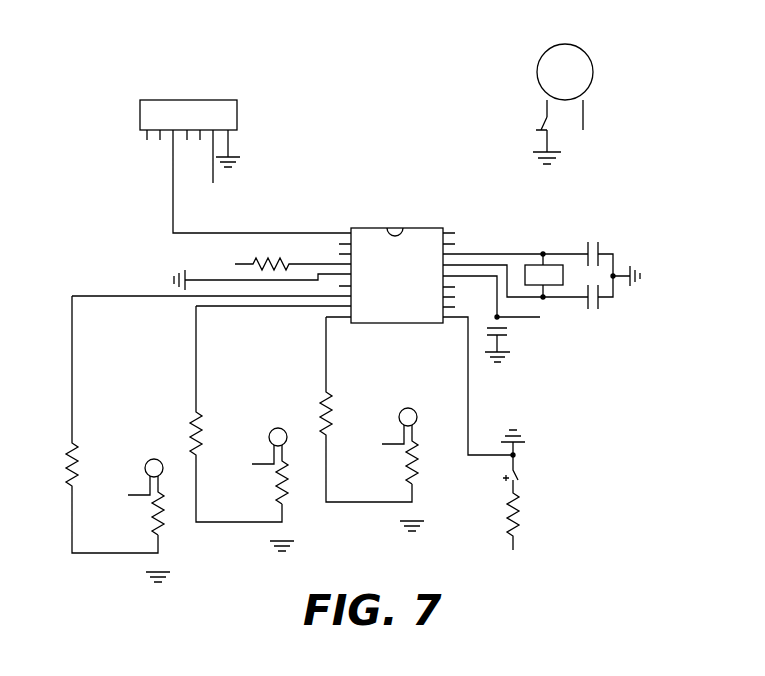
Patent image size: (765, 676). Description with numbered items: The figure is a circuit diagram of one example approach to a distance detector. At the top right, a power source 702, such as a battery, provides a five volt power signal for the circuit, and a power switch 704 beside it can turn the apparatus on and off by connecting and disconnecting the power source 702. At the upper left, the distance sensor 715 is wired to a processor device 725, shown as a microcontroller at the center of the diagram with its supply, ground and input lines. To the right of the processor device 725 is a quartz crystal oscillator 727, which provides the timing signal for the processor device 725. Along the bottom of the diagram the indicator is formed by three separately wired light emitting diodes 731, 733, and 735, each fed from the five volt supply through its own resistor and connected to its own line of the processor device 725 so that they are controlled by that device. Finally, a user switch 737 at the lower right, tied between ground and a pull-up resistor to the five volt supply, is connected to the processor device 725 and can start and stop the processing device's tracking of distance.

The power source 702 is at (548, 52).
The power switch 704 is at (540, 118).
The distance sensor 715 is at (215, 100).
The processor device 725 is at (425, 228).
The quartz crystal oscillator 727 is at (550, 250).
The light emitting diode 731 is at (147, 462).
The light emitting diode 733 is at (271, 431).
The light emitting diode 735 is at (401, 411).
The user switch 737 is at (520, 477).